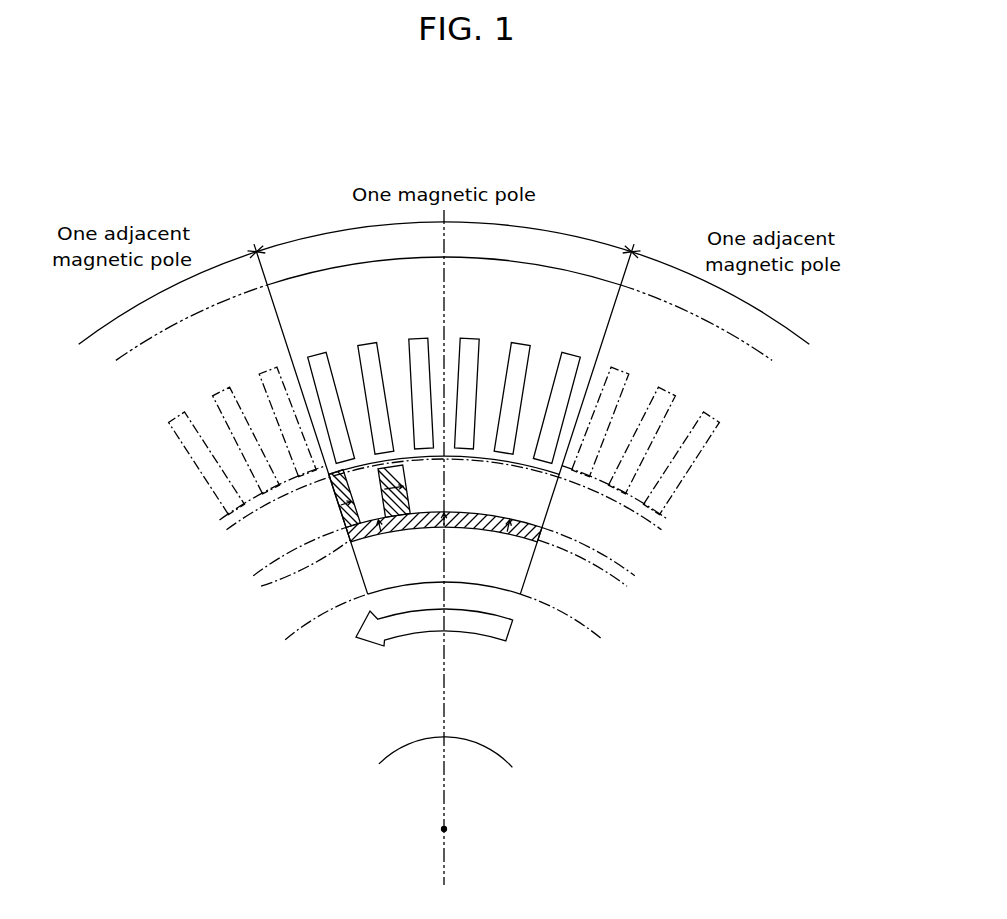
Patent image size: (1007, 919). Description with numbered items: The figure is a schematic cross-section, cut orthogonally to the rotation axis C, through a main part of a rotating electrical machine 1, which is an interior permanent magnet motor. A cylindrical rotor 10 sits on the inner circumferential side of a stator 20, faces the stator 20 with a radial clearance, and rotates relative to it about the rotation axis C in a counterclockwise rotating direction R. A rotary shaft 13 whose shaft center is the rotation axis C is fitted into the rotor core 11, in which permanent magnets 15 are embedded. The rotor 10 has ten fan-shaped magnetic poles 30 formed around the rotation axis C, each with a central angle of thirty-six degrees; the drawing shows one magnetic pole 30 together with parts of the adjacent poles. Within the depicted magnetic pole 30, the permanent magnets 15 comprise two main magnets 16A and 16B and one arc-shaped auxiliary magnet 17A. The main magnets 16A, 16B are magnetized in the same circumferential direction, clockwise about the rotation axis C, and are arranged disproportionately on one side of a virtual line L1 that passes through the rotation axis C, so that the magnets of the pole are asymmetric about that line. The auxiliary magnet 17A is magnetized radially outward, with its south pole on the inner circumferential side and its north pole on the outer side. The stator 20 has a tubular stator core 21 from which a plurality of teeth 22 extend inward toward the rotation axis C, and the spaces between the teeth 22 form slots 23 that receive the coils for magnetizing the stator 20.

The rotating electrical machine 1 is at (275, 173).
The rotor 10 is at (539, 581).
The rotor core 11 is at (368, 570).
The rotary shaft 13 is at (488, 761).
The permanent magnets 15 is at (251, 518).
The main magnet 16A is at (404, 496).
The main magnet 16B is at (328, 492).
The auxiliary magnet 17A is at (356, 571).
The stator 20 is at (347, 289).
The stator core 21 is at (290, 315).
The teeth 22 is at (524, 445).
The slots 23 is at (565, 355).
The magnetic pole 30 is at (556, 251).
The rotating direction R is at (408, 627).
The virtual line L1 is at (447, 697).
The rotation axis C is at (449, 829).